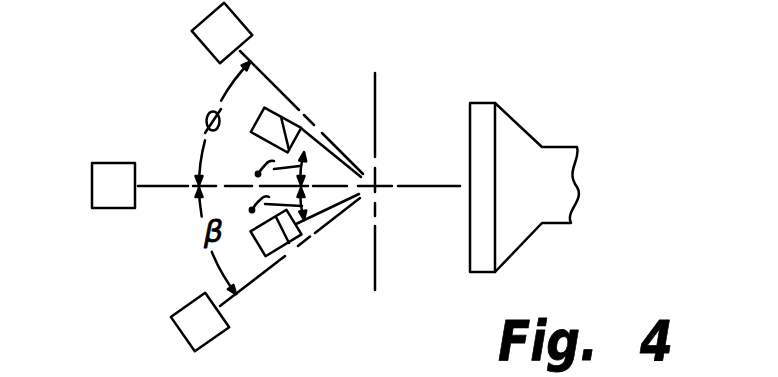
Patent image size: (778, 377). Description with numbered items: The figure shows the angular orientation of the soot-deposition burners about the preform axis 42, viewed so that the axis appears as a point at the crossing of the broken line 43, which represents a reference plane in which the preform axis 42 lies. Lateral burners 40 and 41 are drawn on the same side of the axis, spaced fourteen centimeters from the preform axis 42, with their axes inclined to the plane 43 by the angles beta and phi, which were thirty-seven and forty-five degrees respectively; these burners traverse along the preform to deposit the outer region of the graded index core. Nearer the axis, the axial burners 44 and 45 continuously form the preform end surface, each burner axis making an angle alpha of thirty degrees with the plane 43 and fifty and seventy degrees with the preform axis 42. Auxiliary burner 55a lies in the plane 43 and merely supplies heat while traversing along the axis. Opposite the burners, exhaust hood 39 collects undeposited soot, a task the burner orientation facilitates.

The auxiliary burner 55a is at (100, 184).
The lateral burner 41 is at (231, 24).
The lateral burner 40 is at (211, 328).
The axial burner 44 is at (272, 128).
The axial burner 45 is at (273, 241).
The preform axis 42 is at (377, 189).
The reference plane 43 is at (430, 186).
The exhaust hood 39 is at (519, 125).